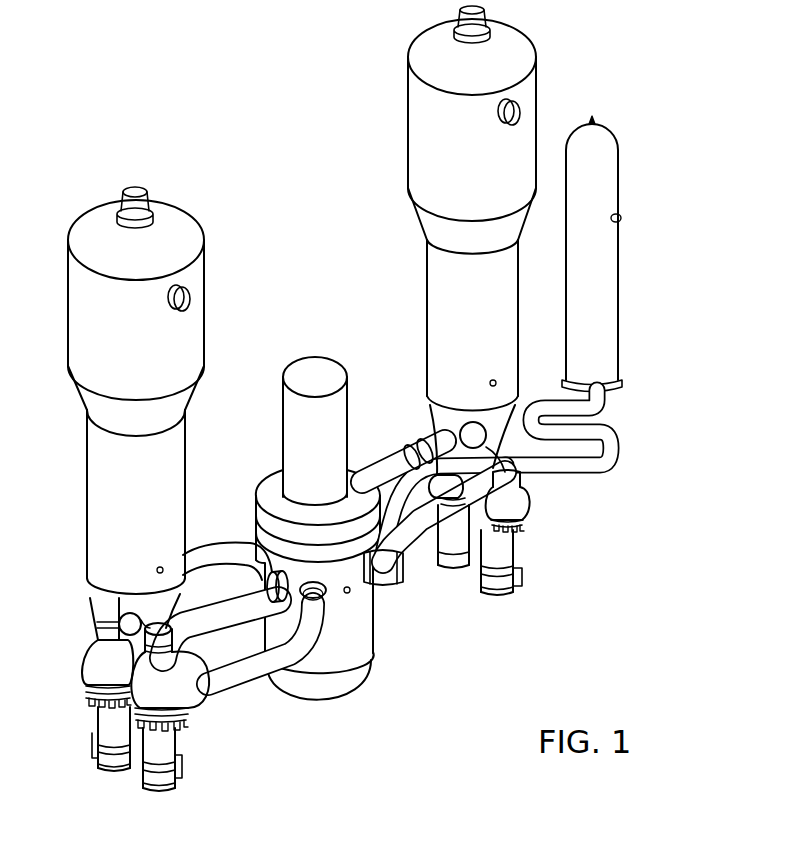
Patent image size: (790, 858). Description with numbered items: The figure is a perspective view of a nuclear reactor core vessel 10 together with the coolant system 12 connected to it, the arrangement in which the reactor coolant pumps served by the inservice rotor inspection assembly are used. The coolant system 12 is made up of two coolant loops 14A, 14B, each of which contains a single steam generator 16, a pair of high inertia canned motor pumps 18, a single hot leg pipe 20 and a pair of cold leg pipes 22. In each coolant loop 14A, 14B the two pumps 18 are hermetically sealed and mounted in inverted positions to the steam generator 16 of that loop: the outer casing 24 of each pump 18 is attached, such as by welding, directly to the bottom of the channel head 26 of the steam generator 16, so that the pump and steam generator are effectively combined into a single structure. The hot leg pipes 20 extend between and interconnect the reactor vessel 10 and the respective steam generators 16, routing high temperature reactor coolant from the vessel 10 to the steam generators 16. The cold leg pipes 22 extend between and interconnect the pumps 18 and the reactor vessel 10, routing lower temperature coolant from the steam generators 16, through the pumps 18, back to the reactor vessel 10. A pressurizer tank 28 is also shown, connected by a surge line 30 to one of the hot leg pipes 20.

The nuclear reactor core vessel 10 is at (355, 478).
The coolant system 12 is at (227, 243).
The coolant loop 14A is at (225, 706).
The coolant loop 14B is at (437, 587).
The steam generator 16 is at (88, 494).
The high inertia canned motor pump 18 is at (97, 719).
The hot leg pipe 20 is at (222, 548).
The cold leg pipe 22 is at (382, 450).
The outer casing 24 is at (92, 709).
The channel head 26 is at (118, 624).
The pressurizer tank 28 is at (612, 290).
The surge line 30 is at (617, 447).